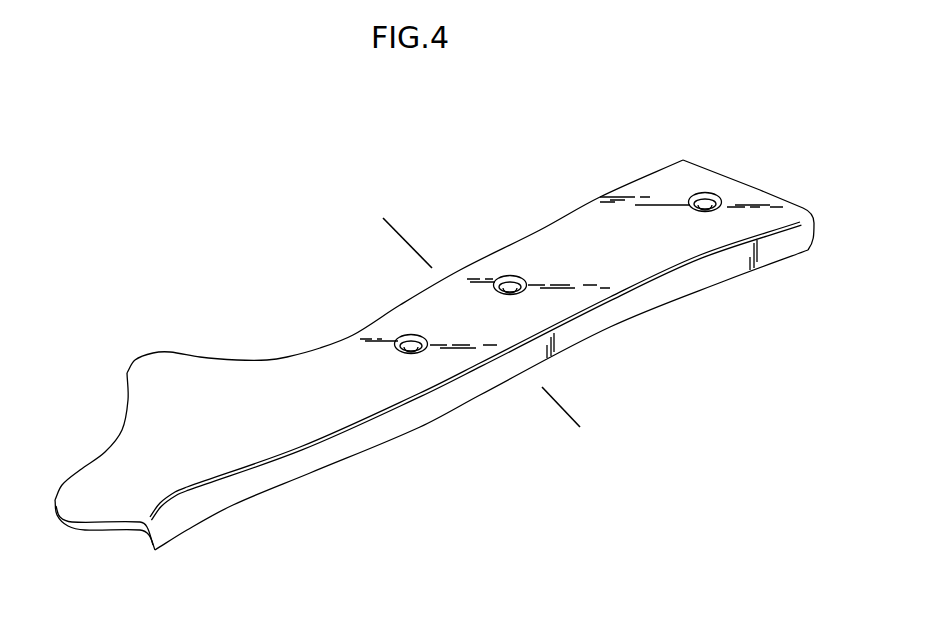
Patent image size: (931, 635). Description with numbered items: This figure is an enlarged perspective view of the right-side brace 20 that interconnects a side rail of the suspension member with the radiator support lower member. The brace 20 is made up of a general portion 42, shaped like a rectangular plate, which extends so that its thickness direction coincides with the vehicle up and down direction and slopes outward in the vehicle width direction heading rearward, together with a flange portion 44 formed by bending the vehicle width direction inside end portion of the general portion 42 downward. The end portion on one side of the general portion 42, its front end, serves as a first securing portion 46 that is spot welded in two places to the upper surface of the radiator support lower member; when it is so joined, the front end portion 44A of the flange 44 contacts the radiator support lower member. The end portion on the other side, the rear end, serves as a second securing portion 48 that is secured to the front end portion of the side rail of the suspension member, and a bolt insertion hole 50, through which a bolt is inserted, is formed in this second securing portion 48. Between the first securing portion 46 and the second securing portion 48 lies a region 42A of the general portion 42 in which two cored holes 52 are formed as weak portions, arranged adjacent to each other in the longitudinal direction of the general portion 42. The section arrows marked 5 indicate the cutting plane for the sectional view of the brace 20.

The right-side brace 20 is at (278, 226).
The general portion 42 is at (468, 293).
The region of the general portion 42A is at (437, 313).
The flange portion 44 is at (590, 322).
The front end portion of the flange 44A is at (168, 518).
The first securing portion 46 is at (137, 437).
The second securing portion 48 is at (657, 187).
The bolt insertion hole 50 is at (697, 190).
The cored holes 52 is at (415, 358).
The section line 5- 5 is at (398, 198).